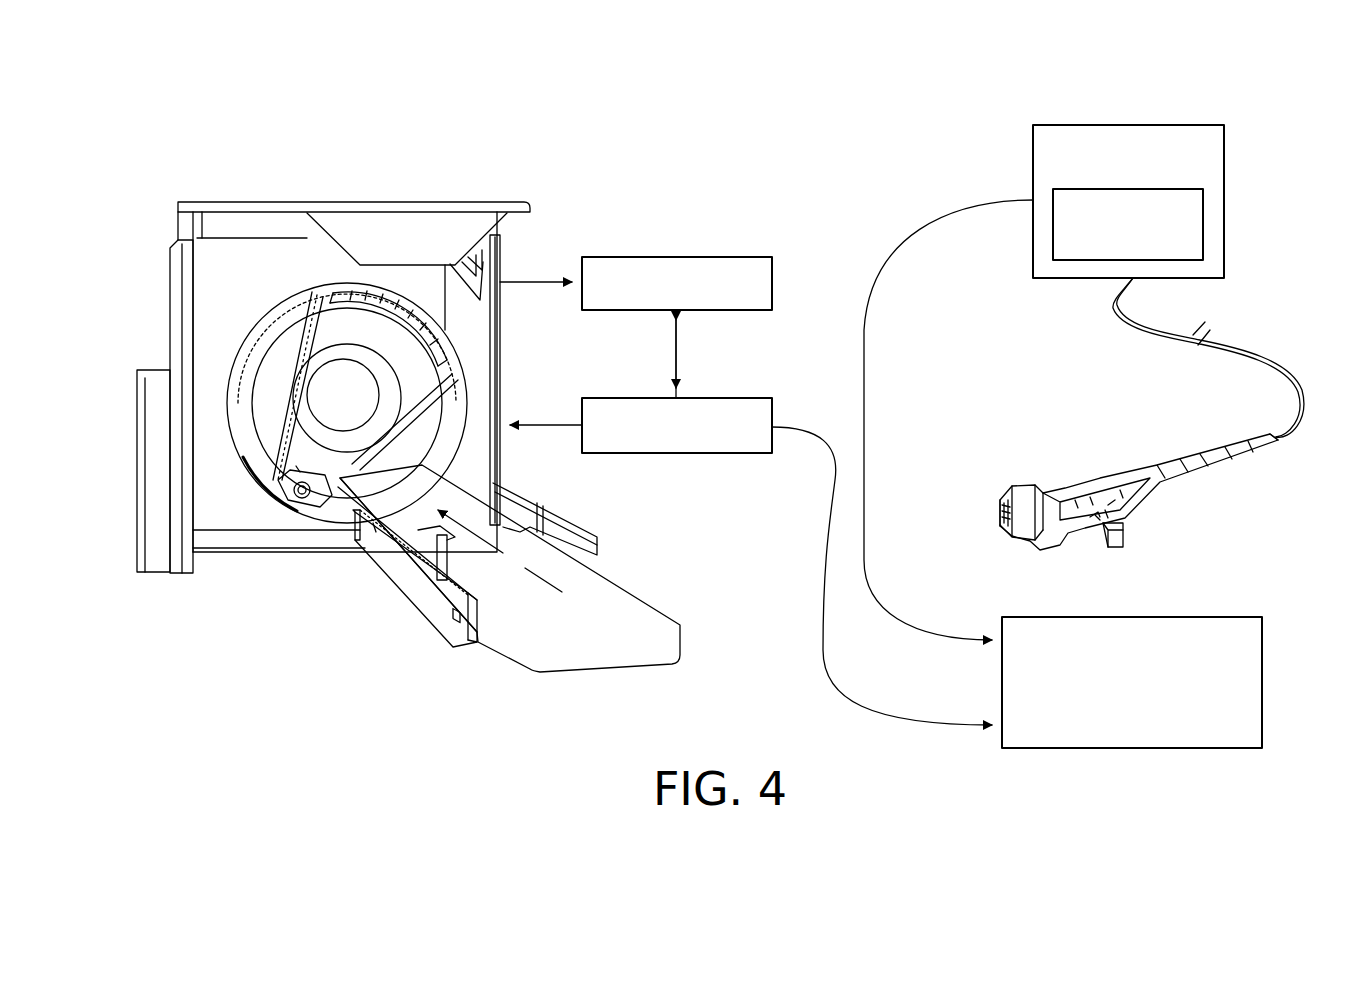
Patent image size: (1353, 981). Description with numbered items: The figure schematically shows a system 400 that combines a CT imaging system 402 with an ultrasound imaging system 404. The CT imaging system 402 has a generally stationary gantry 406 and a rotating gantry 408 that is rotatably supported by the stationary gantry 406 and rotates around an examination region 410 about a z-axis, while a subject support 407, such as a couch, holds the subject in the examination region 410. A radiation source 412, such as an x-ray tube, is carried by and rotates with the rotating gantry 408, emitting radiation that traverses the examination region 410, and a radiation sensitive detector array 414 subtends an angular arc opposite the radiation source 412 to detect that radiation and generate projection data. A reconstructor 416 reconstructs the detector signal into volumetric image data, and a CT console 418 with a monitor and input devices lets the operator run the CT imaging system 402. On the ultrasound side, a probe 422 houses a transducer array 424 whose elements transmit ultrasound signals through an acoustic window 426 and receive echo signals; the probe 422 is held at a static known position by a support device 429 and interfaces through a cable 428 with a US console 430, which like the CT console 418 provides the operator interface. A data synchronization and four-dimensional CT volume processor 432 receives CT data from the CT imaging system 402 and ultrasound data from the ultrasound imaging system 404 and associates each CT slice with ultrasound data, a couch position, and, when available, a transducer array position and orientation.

The system 400 is at (178, 108).
The CT imaging system 402 is at (794, 150).
The ultrasound imaging system 404 is at (1050, 112).
The stationary gantry 406 is at (175, 300).
The subject support 407 is at (640, 605).
The rotating gantry 408 is at (330, 330).
The examination region 410 is at (316, 402).
The radiation source 412 is at (302, 497).
The radiation sensitive detector array 414 is at (457, 350).
The reconstructor 416 is at (722, 257).
The CT console 418 is at (722, 453).
The probe 422 is at (1113, 470).
The transducer array 424 is at (1203, 233).
The acoustic window 426 is at (1002, 520).
The cable 428 is at (1185, 470).
The device 429 is at (1127, 530).
The US console 430 is at (1224, 152).
The data synchronization and 4D CT volume processor 432 is at (1262, 670).